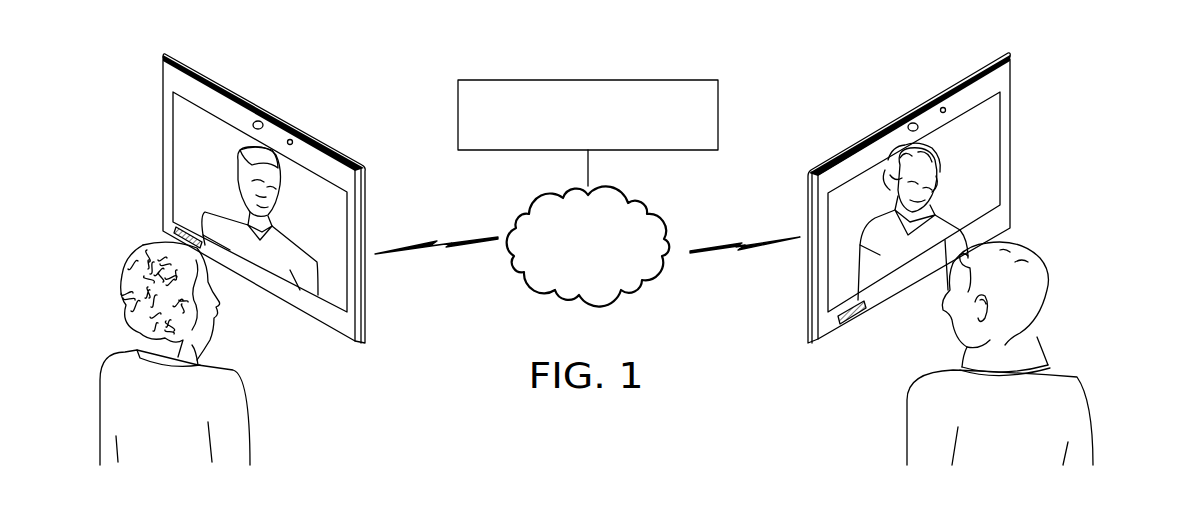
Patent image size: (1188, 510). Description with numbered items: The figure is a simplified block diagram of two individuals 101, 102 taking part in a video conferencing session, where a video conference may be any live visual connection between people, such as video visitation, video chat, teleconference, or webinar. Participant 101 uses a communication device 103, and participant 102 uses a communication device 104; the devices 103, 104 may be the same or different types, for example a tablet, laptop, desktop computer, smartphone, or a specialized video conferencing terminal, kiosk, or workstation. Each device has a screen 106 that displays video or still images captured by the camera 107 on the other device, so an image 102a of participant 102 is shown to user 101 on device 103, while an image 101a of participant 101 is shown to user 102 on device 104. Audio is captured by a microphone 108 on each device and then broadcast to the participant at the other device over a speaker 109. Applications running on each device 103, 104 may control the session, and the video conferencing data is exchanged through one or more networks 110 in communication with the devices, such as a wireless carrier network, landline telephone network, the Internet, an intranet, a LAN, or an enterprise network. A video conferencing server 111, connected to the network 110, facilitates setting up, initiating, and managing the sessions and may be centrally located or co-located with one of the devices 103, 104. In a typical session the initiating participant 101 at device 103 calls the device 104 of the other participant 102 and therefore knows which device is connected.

The participant 101 is at (95, 406).
The participant 102 is at (1090, 406).
The image of participant 101 101a is at (884, 305).
The image of participant 102 102a is at (292, 278).
The communication device 103 is at (163, 141).
The communication device 104 is at (1011, 141).
The screen 106 is at (358, 213).
The camera 107 is at (255, 121).
The microphone 108 is at (291, 139).
The speaker 109 is at (173, 231).
The network 110 is at (566, 258).
The video conferencing server 111 is at (576, 79).